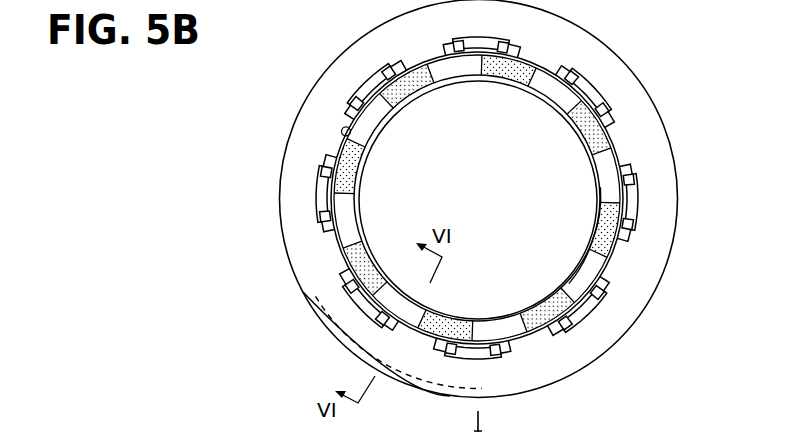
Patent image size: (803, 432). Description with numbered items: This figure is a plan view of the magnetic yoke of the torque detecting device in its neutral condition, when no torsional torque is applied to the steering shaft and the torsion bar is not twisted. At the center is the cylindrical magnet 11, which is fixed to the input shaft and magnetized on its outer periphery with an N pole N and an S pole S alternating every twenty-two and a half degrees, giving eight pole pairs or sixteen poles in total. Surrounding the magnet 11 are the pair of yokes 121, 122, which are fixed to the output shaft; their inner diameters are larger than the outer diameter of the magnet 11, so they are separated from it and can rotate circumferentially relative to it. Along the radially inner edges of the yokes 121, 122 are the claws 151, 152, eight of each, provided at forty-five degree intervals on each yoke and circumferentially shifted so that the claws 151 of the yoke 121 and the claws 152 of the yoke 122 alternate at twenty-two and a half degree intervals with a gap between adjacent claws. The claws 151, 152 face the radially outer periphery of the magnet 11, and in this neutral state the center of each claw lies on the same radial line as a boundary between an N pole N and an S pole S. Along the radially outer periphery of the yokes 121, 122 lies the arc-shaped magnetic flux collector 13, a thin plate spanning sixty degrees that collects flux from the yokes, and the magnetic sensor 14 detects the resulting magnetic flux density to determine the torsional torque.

The magnet 11 is at (585, 131).
The yoke 121 is at (305, 102).
The yoke 122 is at (345, 278).
The claws 151 is at (343, 136).
The claws 152 is at (322, 197).
The magnetic flux collector 13 is at (457, 396).
The magnetic sensor 14 is at (387, 367).
The N pole N is at (605, 188).
The S pole S is at (608, 250).